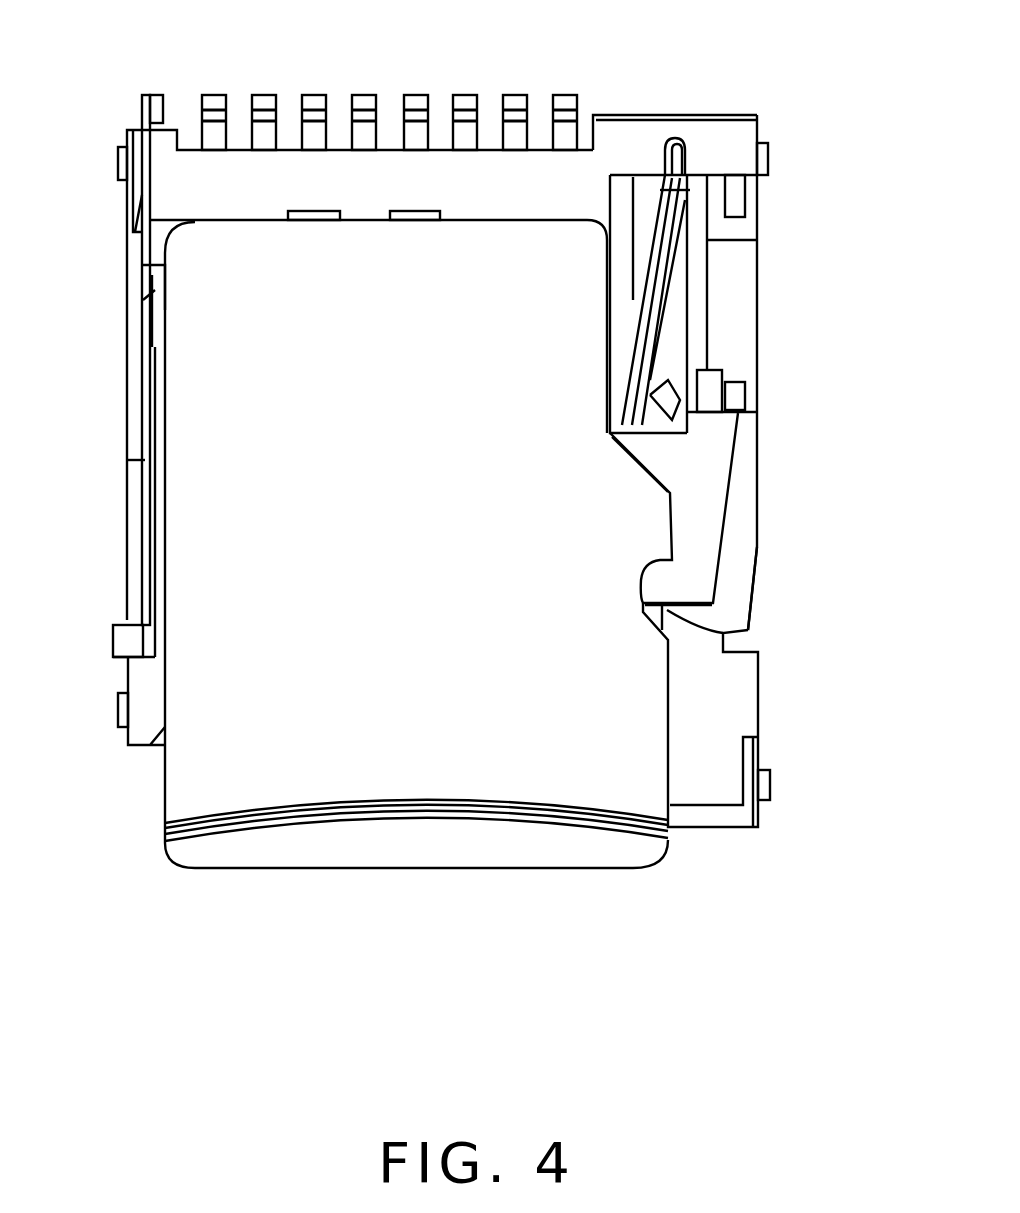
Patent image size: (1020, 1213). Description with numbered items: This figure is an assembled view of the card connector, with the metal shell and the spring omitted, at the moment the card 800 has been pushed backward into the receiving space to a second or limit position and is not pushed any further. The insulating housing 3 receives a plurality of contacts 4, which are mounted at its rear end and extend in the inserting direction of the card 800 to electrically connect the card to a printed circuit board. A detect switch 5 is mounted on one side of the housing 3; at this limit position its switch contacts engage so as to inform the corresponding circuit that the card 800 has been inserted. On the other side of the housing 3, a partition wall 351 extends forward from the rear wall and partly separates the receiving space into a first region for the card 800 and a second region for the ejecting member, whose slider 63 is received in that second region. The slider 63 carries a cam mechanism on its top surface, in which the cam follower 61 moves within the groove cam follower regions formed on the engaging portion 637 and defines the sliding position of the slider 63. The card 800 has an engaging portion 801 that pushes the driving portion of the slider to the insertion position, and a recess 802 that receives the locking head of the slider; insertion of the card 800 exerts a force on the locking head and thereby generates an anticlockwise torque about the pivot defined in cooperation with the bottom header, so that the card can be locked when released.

The insulating housing 3 is at (710, 813).
The contacts 4 is at (515, 100).
The detect switch 5 is at (128, 317).
The cam follower 61 is at (680, 270).
The slider 63 is at (700, 533).
The partition wall 351 is at (623, 232).
The engaging portion 637 is at (648, 217).
The card 800 is at (203, 850).
The engaging portion 801 is at (645, 462).
The recess 802 is at (690, 626).